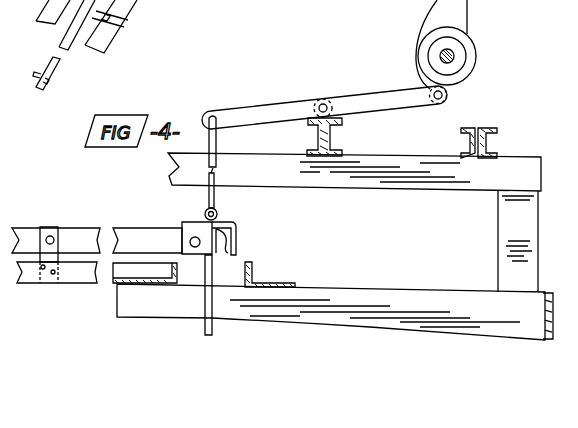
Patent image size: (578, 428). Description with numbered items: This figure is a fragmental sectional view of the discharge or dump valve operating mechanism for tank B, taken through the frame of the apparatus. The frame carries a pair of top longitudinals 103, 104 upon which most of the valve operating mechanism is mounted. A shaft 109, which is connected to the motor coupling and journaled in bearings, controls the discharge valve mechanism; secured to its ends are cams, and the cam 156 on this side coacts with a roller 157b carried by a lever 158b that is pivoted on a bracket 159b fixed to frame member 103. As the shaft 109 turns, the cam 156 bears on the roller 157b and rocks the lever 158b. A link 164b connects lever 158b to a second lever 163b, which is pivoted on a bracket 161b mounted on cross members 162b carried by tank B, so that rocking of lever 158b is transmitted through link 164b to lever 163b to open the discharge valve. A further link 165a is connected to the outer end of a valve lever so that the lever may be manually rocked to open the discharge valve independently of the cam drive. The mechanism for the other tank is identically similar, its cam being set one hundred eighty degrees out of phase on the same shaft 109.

The pivot pin 165a is at (45, 80).
The cam 156 is at (445, 7).
The shaft 109 is at (452, 53).
The bracket 159b is at (323, 104).
The lever 158b is at (388, 82).
The roller 157b is at (436, 104).
The top longitudinal 103 is at (352, 135).
The top longitudinal 104 is at (488, 137).
The link 164b is at (214, 180).
The bracket 161b is at (55, 232).
The lever 163b is at (174, 225).
The cross members 162b is at (252, 283).